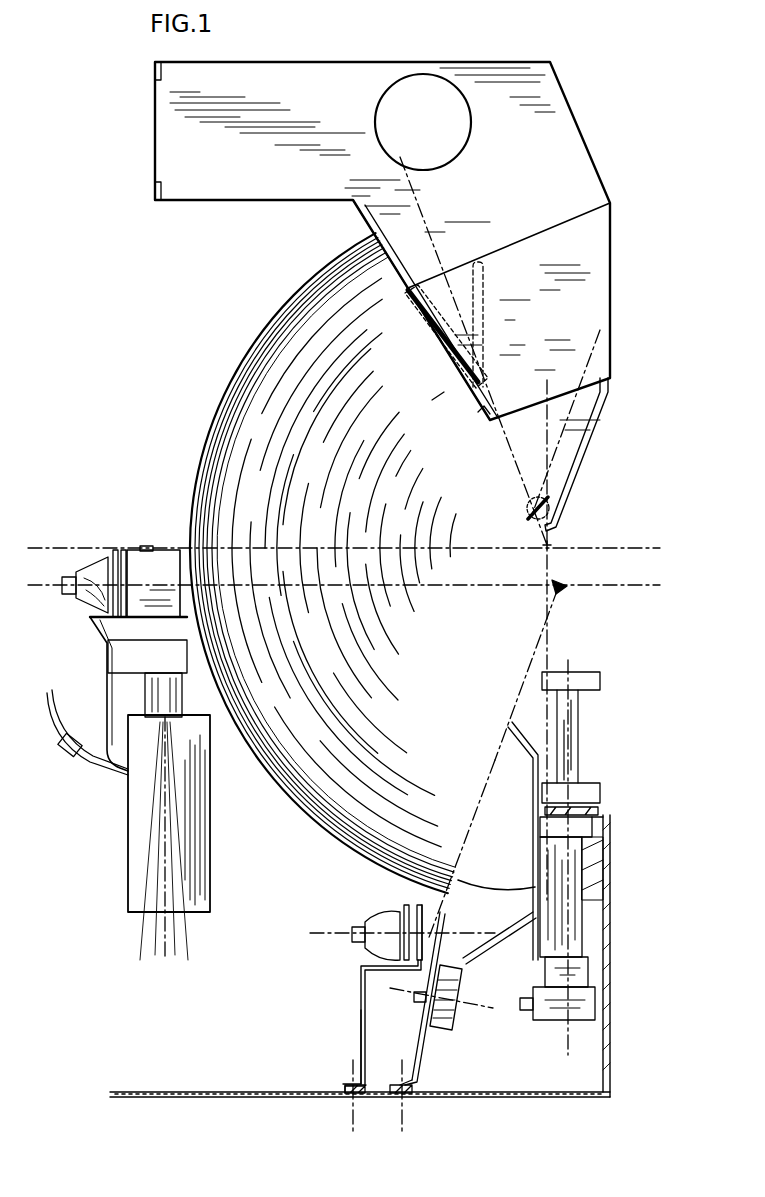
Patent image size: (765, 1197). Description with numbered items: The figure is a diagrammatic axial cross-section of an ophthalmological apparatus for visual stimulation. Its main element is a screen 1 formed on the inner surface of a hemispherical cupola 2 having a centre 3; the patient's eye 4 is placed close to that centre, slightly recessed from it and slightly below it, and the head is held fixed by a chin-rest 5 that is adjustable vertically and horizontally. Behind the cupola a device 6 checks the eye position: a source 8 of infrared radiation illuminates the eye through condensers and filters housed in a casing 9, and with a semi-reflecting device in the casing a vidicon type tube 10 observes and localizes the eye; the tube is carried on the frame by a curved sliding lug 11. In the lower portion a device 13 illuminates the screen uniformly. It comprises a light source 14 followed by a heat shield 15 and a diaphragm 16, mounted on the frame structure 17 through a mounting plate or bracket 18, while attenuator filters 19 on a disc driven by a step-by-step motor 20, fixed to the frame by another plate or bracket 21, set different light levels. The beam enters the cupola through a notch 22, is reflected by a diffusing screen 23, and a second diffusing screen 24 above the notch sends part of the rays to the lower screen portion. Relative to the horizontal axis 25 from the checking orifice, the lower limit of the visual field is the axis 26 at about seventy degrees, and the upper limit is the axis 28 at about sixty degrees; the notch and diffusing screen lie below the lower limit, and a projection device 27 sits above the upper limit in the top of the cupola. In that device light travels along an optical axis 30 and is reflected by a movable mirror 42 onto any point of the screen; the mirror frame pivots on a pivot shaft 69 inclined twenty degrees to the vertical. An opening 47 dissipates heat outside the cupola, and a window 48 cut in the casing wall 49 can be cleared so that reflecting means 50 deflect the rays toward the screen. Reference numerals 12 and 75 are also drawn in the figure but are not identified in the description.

The screen 1 is at (241, 493).
The hemispherical cupola 2 is at (188, 482).
The centre of the cupola 3 is at (551, 546).
The patient's eye 4 is at (566, 588).
The chin-rest 5 is at (586, 786).
The eye position checking device 6 is at (56, 631).
The source of infrared radiation 8 is at (84, 564).
The casing 9 is at (144, 548).
The vidicon type tube 10 is at (210, 856).
The curved sliding lug 11 is at (102, 764).
The cable clip 12 is at (66, 758).
The uniform illuminating device 13 is at (349, 1006).
The light source 14 is at (358, 946).
The heat shield 15 is at (403, 904).
The diaphragm 16 is at (425, 904).
The frame structure 17 is at (345, 1096).
The mounting plate or bracket 18 is at (370, 1062).
The attenuator filters 19 is at (444, 922).
The step-by-step motor 20 is at (454, 1012).
The plate or bracket 21 is at (422, 1070).
The notch 22 is at (492, 882).
The diffusing screen 23 is at (498, 948).
The second diffusing screen 24 is at (504, 760).
The axis 25 is at (416, 586).
The lower visual field limit axis 26 is at (514, 693).
The projection device 27 is at (599, 294).
The upper visual field limit axis (casing) 28 is at (582, 170).
The optical axis 30 is at (482, 371).
The movable mirror 42 is at (551, 507).
The opening 47 is at (435, 90).
The window 48 is at (426, 335).
The casing wall 49 is at (474, 417).
The reflecting means 50 is at (472, 320).
The pivot shaft 69 is at (576, 431).
The lens 75 is at (443, 400).